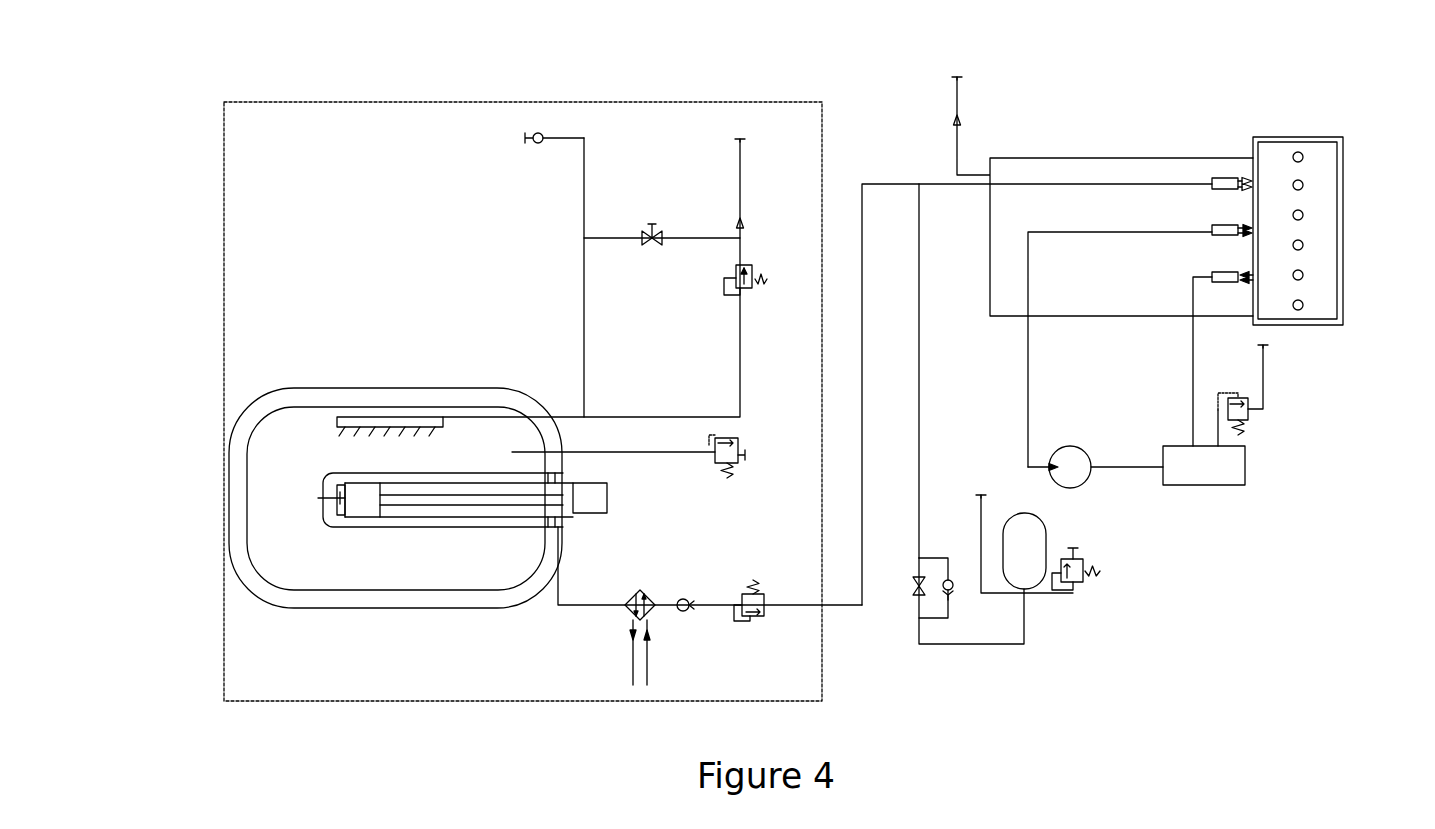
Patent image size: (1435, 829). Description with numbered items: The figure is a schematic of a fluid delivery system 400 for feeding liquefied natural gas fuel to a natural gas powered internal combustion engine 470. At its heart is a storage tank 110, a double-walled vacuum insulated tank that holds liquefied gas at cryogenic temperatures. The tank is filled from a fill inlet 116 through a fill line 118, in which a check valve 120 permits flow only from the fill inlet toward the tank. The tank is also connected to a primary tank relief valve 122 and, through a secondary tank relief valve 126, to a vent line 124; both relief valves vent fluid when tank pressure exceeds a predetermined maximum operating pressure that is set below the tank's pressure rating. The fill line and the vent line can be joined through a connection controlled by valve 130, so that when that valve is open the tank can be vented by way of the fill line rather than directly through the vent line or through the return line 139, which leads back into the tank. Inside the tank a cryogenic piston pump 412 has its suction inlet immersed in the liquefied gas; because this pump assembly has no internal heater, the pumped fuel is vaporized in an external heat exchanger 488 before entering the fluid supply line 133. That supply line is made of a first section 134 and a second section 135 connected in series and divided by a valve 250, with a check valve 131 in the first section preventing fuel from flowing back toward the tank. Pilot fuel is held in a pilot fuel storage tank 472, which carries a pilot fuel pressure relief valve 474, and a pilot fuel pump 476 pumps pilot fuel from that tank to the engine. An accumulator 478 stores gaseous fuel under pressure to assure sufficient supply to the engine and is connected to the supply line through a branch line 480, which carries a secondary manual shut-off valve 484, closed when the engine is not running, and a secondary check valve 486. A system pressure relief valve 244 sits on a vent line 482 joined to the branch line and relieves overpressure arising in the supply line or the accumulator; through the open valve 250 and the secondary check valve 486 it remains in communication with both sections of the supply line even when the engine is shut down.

The fluid delivery system 400 is at (816, 99).
The storage tank 110 is at (320, 597).
The cryogenic piston pump 412 is at (387, 510).
The fill inlet 116 is at (522, 139).
The fill line 118 is at (584, 194).
The check valve 120 is at (532, 146).
The primary tank relief valve 122 is at (740, 438).
The vent line 124 is at (740, 350).
The secondary tank relief valve 126 is at (745, 266).
The valve 130 is at (655, 232).
The check valve 131 is at (689, 602).
The fluid supply line 133 is at (890, 184).
The first section of the supply line 134 is at (604, 606).
The second section of the supply line 135 is at (893, 371).
The return line 139 is at (595, 452).
The system pressure relief valve 244 is at (1083, 582).
The valve 250 is at (755, 618).
The internal combustion engine 470 is at (1278, 137).
The pilot fuel storage tank 472 is at (1245, 468).
The pilot fuel pressure relief valve 474 is at (1250, 418).
The pilot fuel pump 476 is at (1063, 447).
The accumulator 478 is at (1040, 530).
The branch line 480 is at (921, 410).
The vent line 482 is at (1045, 597).
The secondary manual shut-off valve 484 is at (912, 577).
The secondary check valve 486 is at (955, 588).
The external heat exchanger 488 is at (628, 597).